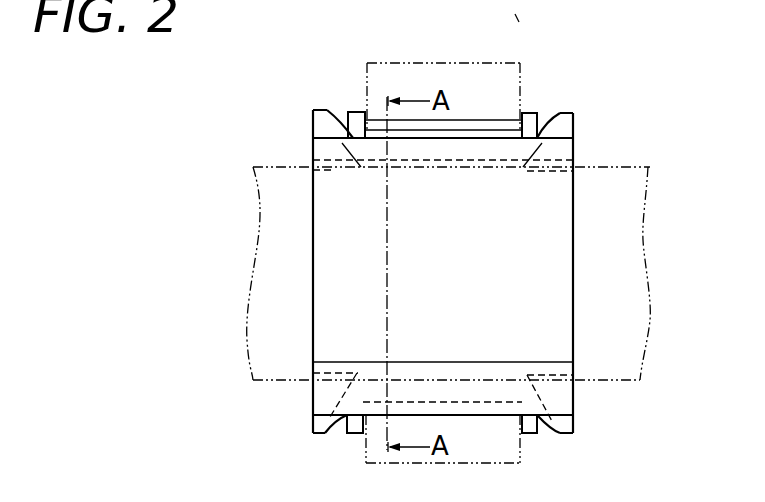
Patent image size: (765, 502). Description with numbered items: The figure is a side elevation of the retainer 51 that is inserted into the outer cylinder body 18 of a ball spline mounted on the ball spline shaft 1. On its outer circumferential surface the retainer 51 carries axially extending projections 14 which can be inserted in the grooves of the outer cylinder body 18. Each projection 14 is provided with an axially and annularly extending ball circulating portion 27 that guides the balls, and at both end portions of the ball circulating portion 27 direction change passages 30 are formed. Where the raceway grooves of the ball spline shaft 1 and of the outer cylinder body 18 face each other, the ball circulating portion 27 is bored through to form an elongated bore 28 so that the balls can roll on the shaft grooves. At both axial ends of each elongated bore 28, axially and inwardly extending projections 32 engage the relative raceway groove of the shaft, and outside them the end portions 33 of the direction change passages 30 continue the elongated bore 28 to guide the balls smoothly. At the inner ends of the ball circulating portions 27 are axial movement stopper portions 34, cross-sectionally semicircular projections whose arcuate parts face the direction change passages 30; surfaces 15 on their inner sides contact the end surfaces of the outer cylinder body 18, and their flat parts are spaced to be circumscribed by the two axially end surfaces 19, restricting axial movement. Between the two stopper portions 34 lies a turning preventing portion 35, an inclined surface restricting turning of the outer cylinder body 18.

The ball spline shaft 1 is at (262, 297).
The projections 14 is at (313, 123).
The surfaces 15 is at (367, 117).
The outer cylinder body 18 is at (407, 67).
The axially end surfaces 19 is at (516, 11).
The ball circulating portions 27 is at (568, 131).
The elongated bores 28 is at (466, 166).
The direction change passages 30 is at (338, 117).
The inwardly extending projections 32 is at (335, 170).
The end portions 33 is at (363, 168).
The axial movement stopper portions 34 is at (357, 111).
The turning preventing portion 35 is at (483, 137).
The retainer 51 is at (325, 268).